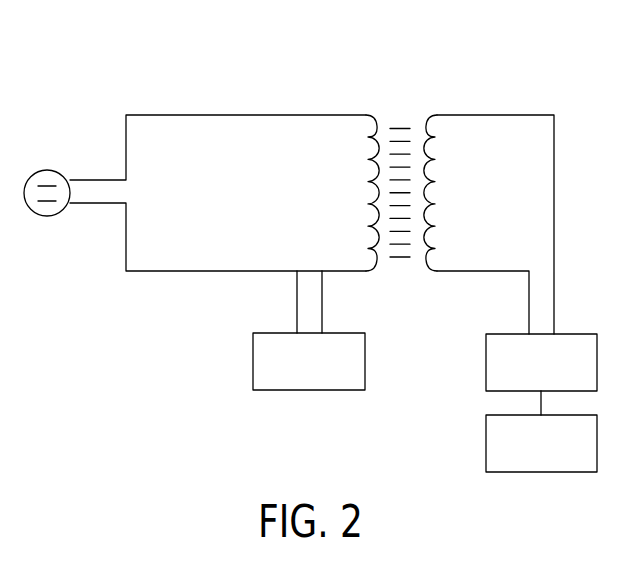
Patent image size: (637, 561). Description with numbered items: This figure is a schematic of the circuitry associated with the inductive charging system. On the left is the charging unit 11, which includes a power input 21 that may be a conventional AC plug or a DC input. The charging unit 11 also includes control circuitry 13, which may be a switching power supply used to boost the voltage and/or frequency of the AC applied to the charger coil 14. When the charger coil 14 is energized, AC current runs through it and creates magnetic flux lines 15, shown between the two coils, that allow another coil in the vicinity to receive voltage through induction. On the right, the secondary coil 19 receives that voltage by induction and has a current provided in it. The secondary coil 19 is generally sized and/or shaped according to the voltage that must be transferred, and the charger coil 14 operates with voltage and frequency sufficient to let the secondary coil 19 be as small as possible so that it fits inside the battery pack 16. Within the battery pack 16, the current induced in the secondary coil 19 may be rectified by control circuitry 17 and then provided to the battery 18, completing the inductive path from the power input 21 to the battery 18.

The charging unit 11 is at (325, 88).
The control circuitry 13 is at (299, 376).
The charger coil 14 is at (375, 175).
The magnetic flux lines 15 is at (399, 110).
The battery pack 16 is at (553, 93).
The control circuitry 17 is at (531, 378).
The battery 18 is at (531, 460).
The secondary coil 19 is at (428, 176).
The power input 21 is at (48, 177).